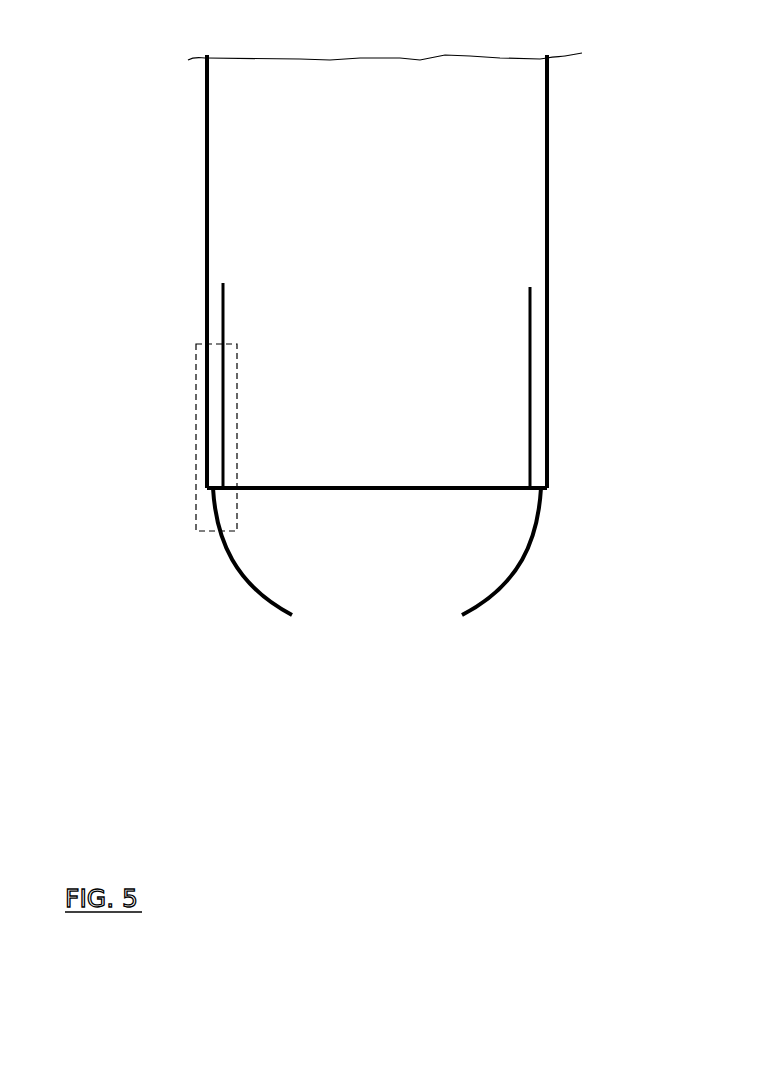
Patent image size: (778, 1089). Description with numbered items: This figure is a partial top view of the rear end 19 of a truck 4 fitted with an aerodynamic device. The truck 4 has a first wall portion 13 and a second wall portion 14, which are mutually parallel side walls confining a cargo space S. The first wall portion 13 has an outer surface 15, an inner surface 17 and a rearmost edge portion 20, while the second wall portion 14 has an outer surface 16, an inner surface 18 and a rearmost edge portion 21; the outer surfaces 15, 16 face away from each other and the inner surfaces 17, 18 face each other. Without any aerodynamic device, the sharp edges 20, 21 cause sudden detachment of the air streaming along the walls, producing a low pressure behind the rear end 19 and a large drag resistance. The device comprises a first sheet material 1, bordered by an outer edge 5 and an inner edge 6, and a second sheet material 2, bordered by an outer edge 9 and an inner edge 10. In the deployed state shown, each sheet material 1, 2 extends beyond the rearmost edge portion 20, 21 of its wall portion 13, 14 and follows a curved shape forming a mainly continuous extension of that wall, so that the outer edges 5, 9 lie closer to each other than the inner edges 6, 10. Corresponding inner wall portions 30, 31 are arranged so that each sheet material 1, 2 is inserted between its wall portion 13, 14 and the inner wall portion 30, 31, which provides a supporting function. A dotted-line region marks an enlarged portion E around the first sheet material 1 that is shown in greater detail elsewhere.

The first sheet material 1 is at (233, 567).
The second sheet material 2 is at (525, 567).
The truck 4 is at (160, 230).
The outer edge 5 is at (287, 622).
The inner edge 6 is at (211, 452).
The outer edge 9 is at (470, 622).
The inner edge 10 is at (540, 488).
The first wall portion 13 is at (205, 82).
The second wall portion 14 is at (549, 110).
The outer surface 15 is at (195, 107).
The outer surface 16 is at (560, 165).
The inner surface 17 is at (220, 228).
The inner surface 18 is at (535, 190).
The rear end 19 is at (372, 512).
The rearmost edge portion 20 is at (193, 489).
The rearmost edge portion 21 is at (561, 489).
The inner wall portion 30 is at (225, 400).
The inner wall portion 31 is at (528, 412).
The enlarged portion E is at (195, 508).
The cargo space S is at (343, 319).